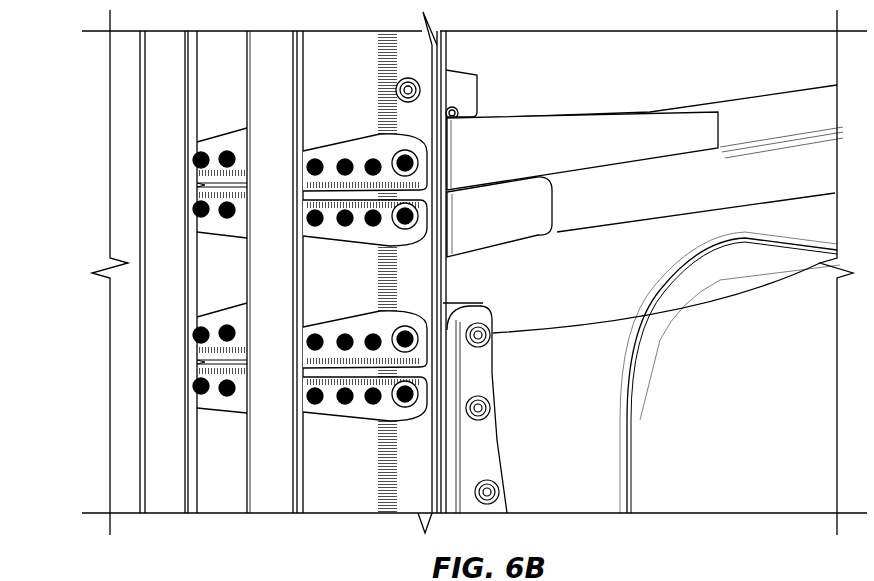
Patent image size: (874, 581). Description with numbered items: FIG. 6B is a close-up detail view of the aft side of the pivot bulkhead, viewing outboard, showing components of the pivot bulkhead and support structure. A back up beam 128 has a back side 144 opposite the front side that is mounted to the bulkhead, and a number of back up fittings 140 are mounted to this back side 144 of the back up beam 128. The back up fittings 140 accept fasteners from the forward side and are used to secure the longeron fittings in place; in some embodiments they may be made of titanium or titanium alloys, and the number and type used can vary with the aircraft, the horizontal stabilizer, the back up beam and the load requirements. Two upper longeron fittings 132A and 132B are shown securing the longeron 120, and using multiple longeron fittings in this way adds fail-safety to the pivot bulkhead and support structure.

The longeron 120 is at (780, 112).
The back up beam 128 is at (273, 122).
The upper longeron fitting 132A is at (565, 127).
The upper longeron fitting 132B is at (503, 228).
The back up fitting 140 is at (213, 224).
The back side 144 is at (128, 462).